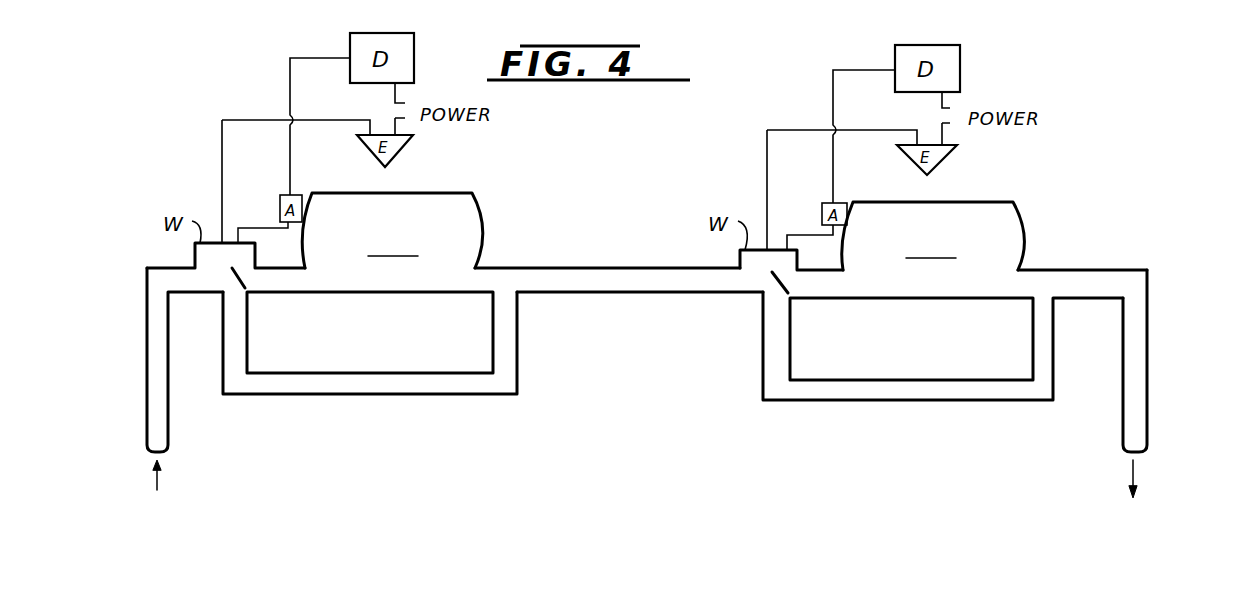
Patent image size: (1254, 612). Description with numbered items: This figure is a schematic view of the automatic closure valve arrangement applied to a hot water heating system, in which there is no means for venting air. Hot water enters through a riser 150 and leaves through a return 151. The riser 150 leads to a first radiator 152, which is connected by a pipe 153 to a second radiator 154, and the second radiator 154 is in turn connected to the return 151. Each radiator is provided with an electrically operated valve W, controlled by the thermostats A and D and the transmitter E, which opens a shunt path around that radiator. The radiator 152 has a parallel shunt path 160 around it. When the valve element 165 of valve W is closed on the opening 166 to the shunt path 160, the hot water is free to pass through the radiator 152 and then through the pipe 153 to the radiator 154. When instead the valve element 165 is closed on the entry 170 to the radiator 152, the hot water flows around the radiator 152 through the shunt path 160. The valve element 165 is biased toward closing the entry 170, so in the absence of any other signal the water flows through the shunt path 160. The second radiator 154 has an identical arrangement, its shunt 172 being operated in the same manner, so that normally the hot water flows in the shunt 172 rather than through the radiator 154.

The riser 150 is at (147, 388).
The return 151 is at (1148, 403).
The radiator 152 is at (392, 230).
The pipe 153 is at (660, 248).
The radiator 154 is at (933, 236).
The shunt path 160 is at (317, 395).
The valve element 165 is at (244, 290).
The opening 166 is at (235, 345).
The entry 170 is at (296, 266).
The shunt 172 is at (877, 403).